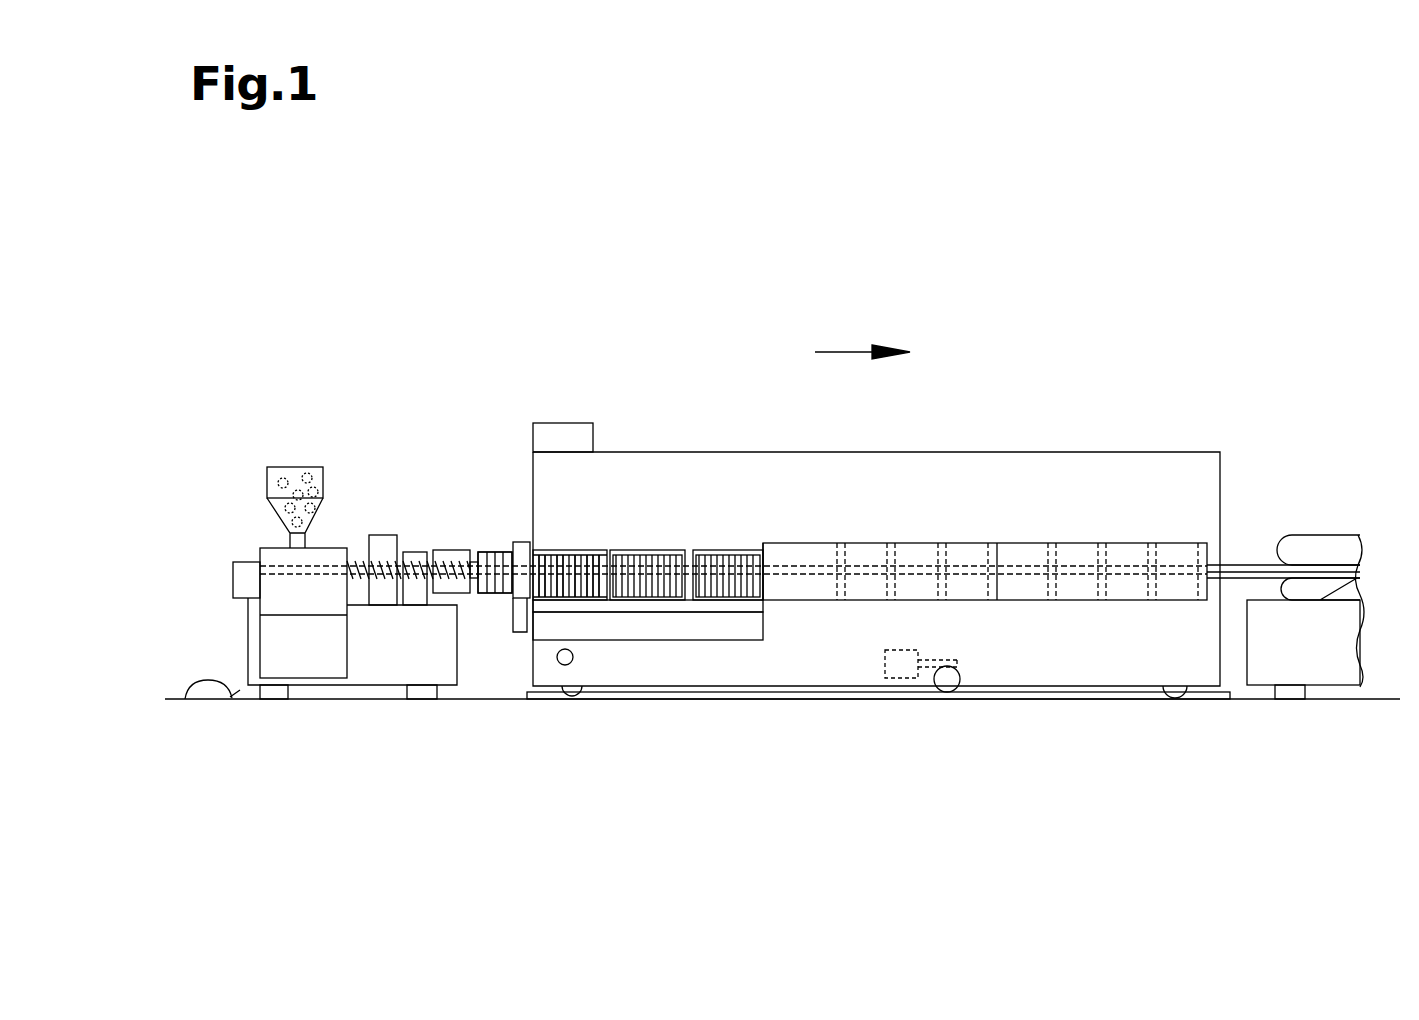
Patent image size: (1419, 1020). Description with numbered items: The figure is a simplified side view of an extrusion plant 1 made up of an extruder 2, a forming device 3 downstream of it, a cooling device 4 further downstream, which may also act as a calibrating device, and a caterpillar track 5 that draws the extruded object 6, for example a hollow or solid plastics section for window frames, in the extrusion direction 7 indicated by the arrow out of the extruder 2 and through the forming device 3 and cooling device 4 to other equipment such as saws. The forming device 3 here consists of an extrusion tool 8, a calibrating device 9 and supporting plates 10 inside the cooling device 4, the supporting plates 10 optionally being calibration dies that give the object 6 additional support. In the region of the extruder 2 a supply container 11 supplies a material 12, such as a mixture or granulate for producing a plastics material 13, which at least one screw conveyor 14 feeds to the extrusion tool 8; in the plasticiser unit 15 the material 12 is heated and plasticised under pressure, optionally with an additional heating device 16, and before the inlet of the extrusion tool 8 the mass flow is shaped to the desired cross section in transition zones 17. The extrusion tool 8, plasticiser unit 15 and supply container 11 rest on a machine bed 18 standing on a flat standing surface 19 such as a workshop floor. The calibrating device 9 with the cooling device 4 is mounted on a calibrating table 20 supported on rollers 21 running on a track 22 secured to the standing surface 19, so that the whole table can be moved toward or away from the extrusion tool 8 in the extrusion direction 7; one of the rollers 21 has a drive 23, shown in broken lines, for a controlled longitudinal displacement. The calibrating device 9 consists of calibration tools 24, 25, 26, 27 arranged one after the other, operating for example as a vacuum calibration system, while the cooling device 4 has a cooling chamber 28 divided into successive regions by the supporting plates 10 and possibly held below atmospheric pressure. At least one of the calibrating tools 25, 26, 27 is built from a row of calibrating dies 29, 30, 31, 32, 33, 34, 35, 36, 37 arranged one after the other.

The extrusion plant 1 is at (515, 215).
The extruder 2 is at (355, 447).
The forming device 3 is at (541, 500).
The cooling device 4 is at (998, 522).
The caterpillar track 5 is at (1325, 550).
The extruded object 6 is at (1243, 567).
The extrusion direction 7 is at (847, 352).
The extrusion tool 8 is at (507, 551).
The calibrating device 9 is at (676, 613).
The supporting plates 10 is at (883, 581).
The supply container 11 is at (275, 478).
The material 12 is at (270, 490).
The plastics material 13 is at (307, 465).
The screw conveyor 14 is at (457, 580).
The plasticiser unit 15 is at (414, 538).
The additional heating device 16 is at (452, 560).
The transition zones 17 is at (502, 593).
The machine bed 18 is at (366, 668).
The standing surface 19 is at (185, 700).
The calibrating table 20 is at (783, 660).
The rollers 21 is at (572, 690).
The track 22 is at (1012, 697).
The drive 23 is at (900, 663).
The calibration tool 24 is at (525, 542).
The calibration tool 25 is at (585, 596).
The calibration tool 26 is at (718, 551).
The calibration tool 27 is at (765, 548).
The cooling chamber 28 is at (1123, 556).
The calibrating die 29 is at (540, 550).
The calibrating die 30 is at (548, 550).
The calibrating die 31 is at (557, 550).
The calibrating die 32 is at (565, 550).
The calibrating die 33 is at (575, 550).
The calibrating die 34 is at (585, 550).
The calibrating die 35 is at (595, 550).
The calibrating die 36 is at (605, 550).
The calibrating die 37 is at (653, 551).